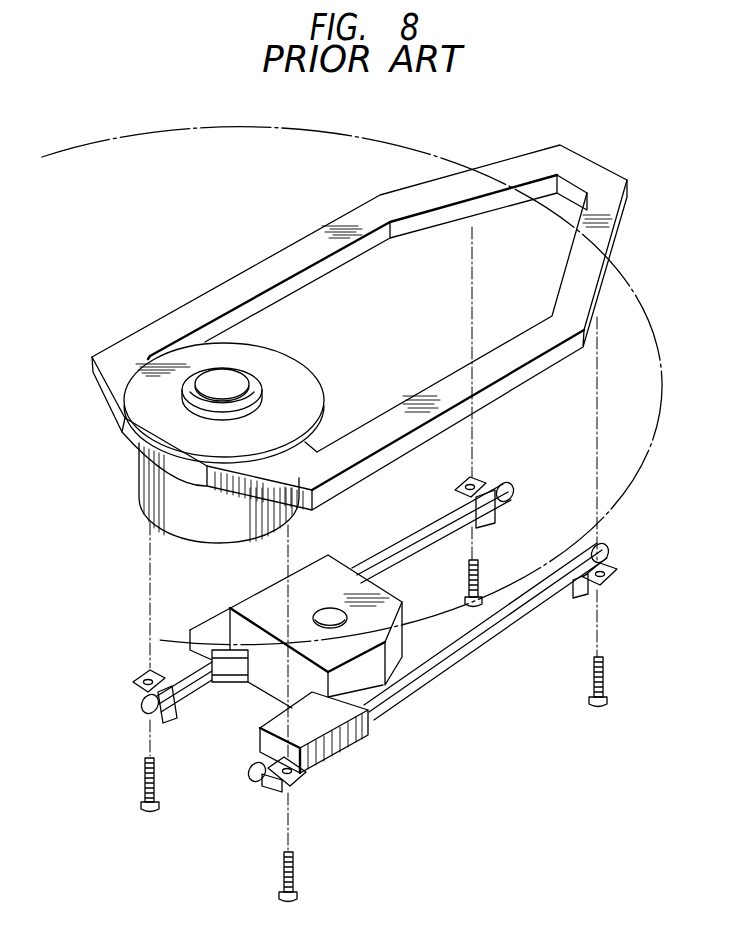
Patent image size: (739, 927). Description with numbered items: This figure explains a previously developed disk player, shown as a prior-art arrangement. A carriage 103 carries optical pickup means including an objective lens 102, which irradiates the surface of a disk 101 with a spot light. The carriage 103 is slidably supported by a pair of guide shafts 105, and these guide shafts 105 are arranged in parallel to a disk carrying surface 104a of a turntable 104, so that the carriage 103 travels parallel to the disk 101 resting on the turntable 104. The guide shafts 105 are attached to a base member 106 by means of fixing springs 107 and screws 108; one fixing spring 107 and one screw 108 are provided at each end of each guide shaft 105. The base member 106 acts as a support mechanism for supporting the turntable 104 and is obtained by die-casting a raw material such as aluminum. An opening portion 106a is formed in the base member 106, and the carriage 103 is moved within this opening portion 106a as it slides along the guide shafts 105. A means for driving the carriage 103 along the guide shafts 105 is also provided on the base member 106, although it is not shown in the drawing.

The disk 101 is at (105, 140).
The objective lens 102 is at (332, 613).
The carriage 103 is at (277, 595).
The turntable 104 is at (290, 345).
The disk carrying surface 104a is at (137, 397).
The guide shafts 105 is at (424, 530).
The base member 106 is at (523, 168).
The opening portion 106a is at (403, 267).
The fixing springs 107 is at (462, 477).
The screws 108 is at (467, 573).